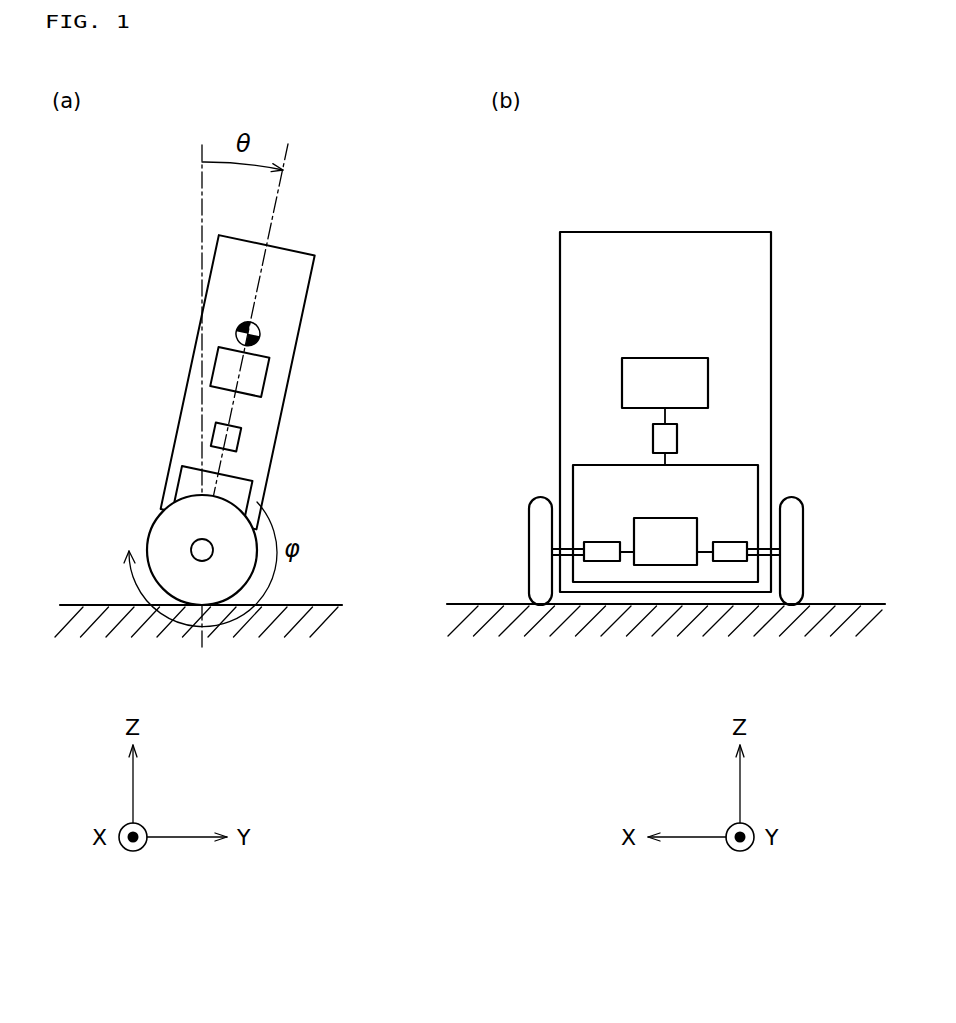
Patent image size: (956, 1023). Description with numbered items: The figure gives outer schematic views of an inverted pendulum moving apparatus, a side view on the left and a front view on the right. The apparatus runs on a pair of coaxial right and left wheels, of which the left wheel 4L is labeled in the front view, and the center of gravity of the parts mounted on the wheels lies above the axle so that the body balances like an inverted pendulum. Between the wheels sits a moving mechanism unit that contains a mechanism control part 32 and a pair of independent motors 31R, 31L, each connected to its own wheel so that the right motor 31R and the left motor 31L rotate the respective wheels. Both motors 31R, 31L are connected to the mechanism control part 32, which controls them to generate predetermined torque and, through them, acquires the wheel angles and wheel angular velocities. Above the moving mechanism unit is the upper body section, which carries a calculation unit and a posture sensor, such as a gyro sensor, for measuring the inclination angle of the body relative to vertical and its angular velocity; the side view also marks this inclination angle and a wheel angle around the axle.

The left wheel 4L is at (795, 515).
The right motor 31R is at (595, 541).
The left motor 31L is at (722, 541).
The mechanism control part 32 is at (663, 517).